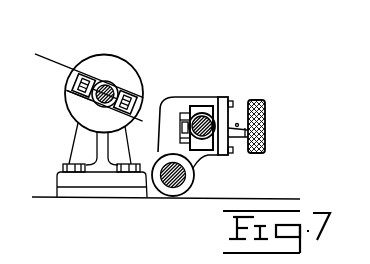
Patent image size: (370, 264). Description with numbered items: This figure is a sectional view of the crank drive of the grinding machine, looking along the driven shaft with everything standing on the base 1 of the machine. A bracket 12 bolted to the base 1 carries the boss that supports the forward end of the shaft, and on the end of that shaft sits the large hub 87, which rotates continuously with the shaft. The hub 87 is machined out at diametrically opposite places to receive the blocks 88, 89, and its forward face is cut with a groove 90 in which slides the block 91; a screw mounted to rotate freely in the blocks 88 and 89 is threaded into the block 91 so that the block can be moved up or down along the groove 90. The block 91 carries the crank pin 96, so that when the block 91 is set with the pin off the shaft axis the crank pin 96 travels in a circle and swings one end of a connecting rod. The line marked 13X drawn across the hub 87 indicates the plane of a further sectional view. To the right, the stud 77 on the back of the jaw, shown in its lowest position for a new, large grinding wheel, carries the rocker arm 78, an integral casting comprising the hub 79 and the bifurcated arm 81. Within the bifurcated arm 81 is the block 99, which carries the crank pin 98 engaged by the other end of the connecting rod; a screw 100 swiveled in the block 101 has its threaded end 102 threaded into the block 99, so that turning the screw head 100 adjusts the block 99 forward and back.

The base 1 is at (266, 201).
The bracket 12 is at (88, 136).
The reference axis 13X is at (36, 58).
The stud 77 is at (173, 188).
The rocker arm 78 is at (186, 98).
The hub 79 is at (194, 180).
The bifurcated arm 81 is at (200, 102).
The large hub 87 is at (106, 55).
The block 88 is at (73, 80).
The block 89 is at (134, 113).
The groove 90 is at (70, 96).
The block 91 is at (94, 98).
The crank pin 96 is at (113, 86).
The crank pin 98 is at (220, 155).
The block 99 is at (207, 113).
The screw head 100 is at (266, 121).
The block 101 is at (226, 101).
The threaded end of screw 102 is at (179, 113).